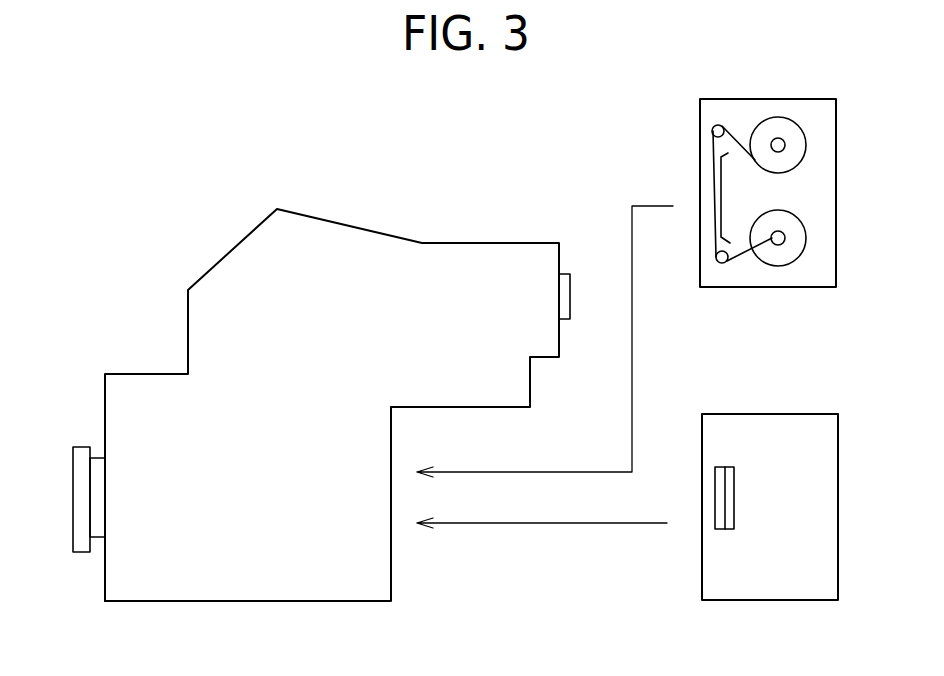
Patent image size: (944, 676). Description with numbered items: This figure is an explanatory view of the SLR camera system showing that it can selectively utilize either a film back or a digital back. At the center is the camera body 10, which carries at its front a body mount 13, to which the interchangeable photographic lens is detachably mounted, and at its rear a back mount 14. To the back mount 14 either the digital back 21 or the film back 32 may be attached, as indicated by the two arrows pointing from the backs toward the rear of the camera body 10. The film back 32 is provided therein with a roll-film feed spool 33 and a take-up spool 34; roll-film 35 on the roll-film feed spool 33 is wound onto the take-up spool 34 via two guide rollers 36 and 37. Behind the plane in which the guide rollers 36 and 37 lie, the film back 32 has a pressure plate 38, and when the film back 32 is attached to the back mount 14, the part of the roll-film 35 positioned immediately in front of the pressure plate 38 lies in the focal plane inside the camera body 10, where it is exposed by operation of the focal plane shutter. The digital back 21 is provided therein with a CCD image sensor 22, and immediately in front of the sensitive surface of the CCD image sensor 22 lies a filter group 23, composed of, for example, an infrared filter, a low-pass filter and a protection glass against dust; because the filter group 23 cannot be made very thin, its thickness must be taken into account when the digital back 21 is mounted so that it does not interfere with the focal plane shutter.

The camera body 10 is at (325, 195).
The body mount 13 is at (81, 452).
The back mount 14 is at (392, 555).
The digital back 21 is at (826, 487).
The CCD image sensor 22 is at (728, 474).
The filter group 23 is at (717, 524).
The film back 32 is at (830, 168).
The roll-film feed spool 33 is at (778, 139).
The take-up spool 34 is at (779, 246).
The roll-film 35 is at (742, 142).
The guide roller 36 is at (712, 131).
The guide roller 37 is at (719, 265).
The pressure plate 38 is at (723, 195).